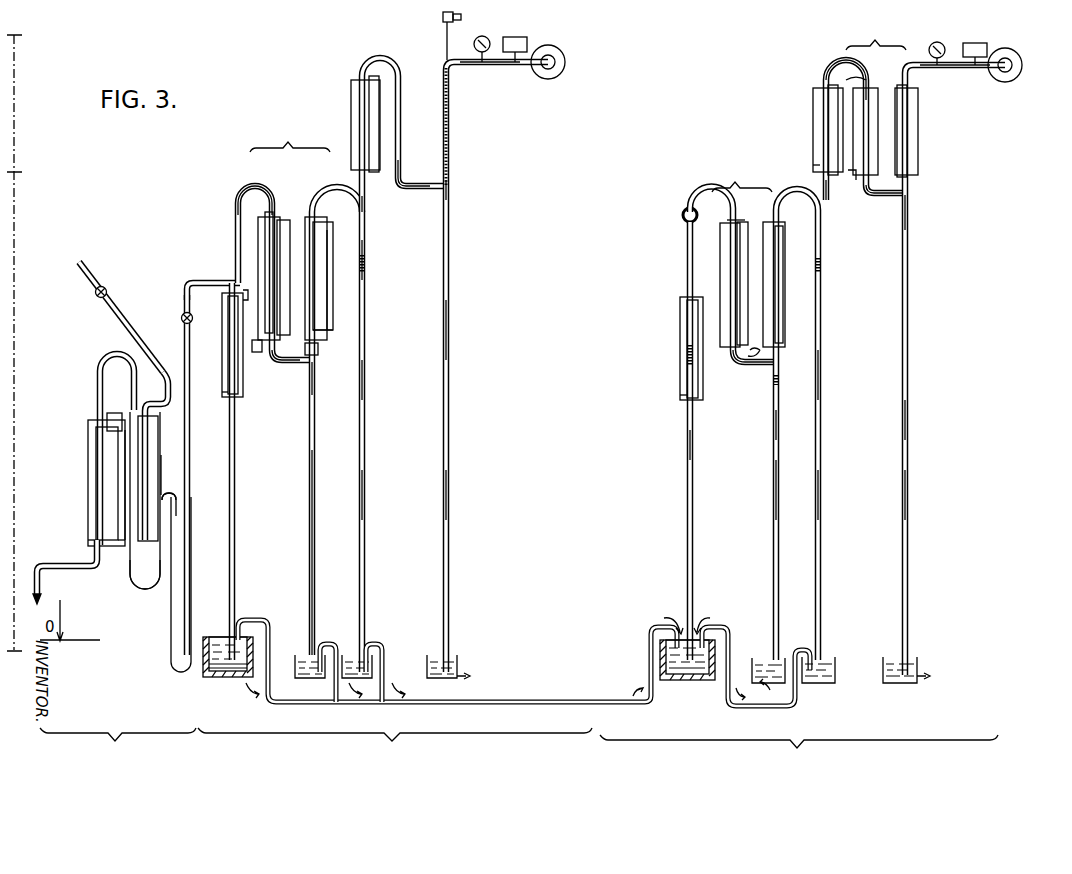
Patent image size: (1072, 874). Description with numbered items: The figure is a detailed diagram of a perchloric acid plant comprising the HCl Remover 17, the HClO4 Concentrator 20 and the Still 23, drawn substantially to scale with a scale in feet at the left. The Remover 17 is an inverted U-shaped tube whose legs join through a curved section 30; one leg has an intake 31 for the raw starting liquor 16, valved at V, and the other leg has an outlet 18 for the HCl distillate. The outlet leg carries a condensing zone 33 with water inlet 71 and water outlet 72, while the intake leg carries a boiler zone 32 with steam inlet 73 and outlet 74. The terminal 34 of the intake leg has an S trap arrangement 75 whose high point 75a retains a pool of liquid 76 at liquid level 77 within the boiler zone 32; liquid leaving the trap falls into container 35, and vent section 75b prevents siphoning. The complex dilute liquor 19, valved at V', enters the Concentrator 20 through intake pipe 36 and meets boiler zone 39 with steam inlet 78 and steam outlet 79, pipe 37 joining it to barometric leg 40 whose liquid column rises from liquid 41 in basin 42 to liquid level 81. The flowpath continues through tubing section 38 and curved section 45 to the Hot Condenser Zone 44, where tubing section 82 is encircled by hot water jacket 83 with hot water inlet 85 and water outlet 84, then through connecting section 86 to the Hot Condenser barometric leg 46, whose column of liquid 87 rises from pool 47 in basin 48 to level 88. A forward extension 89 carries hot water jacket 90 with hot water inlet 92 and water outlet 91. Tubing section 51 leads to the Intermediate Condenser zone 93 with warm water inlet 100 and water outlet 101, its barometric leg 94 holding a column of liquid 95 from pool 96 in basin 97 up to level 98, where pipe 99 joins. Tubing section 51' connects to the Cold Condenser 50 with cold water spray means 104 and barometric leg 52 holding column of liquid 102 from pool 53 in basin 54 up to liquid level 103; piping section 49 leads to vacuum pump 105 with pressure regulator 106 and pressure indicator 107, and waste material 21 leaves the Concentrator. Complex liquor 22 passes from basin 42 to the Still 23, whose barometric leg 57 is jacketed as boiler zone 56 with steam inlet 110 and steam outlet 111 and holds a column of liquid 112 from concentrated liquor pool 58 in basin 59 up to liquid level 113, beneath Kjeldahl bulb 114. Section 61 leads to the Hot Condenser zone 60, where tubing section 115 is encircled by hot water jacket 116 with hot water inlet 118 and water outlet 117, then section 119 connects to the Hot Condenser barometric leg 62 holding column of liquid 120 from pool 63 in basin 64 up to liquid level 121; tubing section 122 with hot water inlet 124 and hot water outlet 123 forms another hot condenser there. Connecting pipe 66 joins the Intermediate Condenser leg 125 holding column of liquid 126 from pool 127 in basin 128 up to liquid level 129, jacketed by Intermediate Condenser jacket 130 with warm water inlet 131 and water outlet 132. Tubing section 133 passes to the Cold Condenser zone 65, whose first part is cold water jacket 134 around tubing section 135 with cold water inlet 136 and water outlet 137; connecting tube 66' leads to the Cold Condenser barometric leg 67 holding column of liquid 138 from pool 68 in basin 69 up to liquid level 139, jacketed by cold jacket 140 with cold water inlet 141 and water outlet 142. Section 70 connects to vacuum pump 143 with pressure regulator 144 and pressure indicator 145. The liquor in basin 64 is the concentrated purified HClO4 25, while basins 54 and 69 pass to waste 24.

The raw starting liquor 16 is at (84, 276).
The HCl Remover 17 is at (118, 749).
The outlet 18 is at (66, 567).
The complex dilute liquor 19 is at (184, 292).
The HClO4 Concentrator 20 is at (395, 749).
The waste material 21 is at (476, 676).
The complex liquor 22 is at (508, 702).
The Still 23 is at (799, 754).
The waste 24 is at (935, 676).
The concentrated purified HClO4 25 is at (756, 666).
The curved section 30 is at (122, 356).
The intake 31 is at (108, 310).
The boiler zone 32 is at (146, 500).
The condensing zone 33 is at (87, 460).
The terminal 34 is at (140, 516).
The container 35 is at (170, 656).
The intake pipe 36 is at (178, 496).
The pipe 37 is at (232, 278).
The tubing section 38 is at (236, 246).
The boiler zone 39 is at (223, 348).
The barometric leg 40 is at (236, 490).
The liquid 41 is at (215, 634).
The basin 42 is at (240, 678).
The Hot Condenser Zone 44 is at (290, 136).
The curved section 45 is at (258, 192).
The Hot Condenser barometric leg 46 is at (315, 492).
The pool 47 is at (302, 650).
The basin 48 is at (297, 664).
The piping section 49 is at (470, 66).
The Cold Condenser 50 is at (443, 94).
The tubing section 51 is at (331, 416).
The tubing section 51' is at (416, 167).
The barometric leg 52 is at (450, 492).
The pool 53 is at (450, 654).
The basin 54 is at (458, 664).
The boiler zone 56 is at (679, 331).
The barometric leg 57 is at (686, 492).
The concentrated liquor pool 58 is at (678, 630).
The basin 59 is at (669, 680).
The Hot Condenser zone 60 is at (742, 173).
The section 61 is at (716, 186).
The Hot Condenser barometric leg 62 is at (774, 480).
The pool 63 is at (772, 656).
The basin 64 is at (752, 670).
The Cold Condenser zone 65 is at (876, 34).
The connecting pipe 66 is at (797, 408).
The connecting tube 66' is at (885, 202).
The Cold Condenser barometric leg 67 is at (910, 496).
The pool 68 is at (908, 656).
The basin 69 is at (918, 672).
The section 70 is at (930, 68).
The water inlet 71 is at (86, 533).
The water outlet 72 is at (118, 416).
The steam inlet 73 is at (142, 420).
The outlet 74 is at (103, 568).
The S trap arrangement 75 is at (155, 592).
The high point 75a is at (170, 492).
The vent section 75b is at (163, 450).
The pool of liquid 76 is at (124, 550).
The liquid level 77 is at (130, 476).
The steam inlet 78 is at (254, 296).
The steam outlet 79 is at (222, 396).
The liquid level 81 is at (229, 362).
The tubing section 82 is at (266, 215).
The hot water jacket 83 is at (262, 258).
The water outlet 84 is at (286, 224).
The hot water inlet 85 is at (257, 352).
The connecting section 86 is at (292, 364).
The column of liquid 87 is at (314, 472).
The level 88 is at (316, 378).
The forward extension 89 is at (322, 212).
The hot water jacket 90 is at (325, 294).
The water outlet 91 is at (330, 230).
The hot water inlet 92 is at (325, 334).
The Intermediate Condenser zone 93 is at (352, 100).
The barometric leg 94 is at (366, 492).
The column of liquid 95 is at (366, 384).
The pool 96 is at (348, 650).
The basin 97 is at (348, 662).
The level 98 is at (365, 256).
The pipe 99 is at (370, 180).
The warm water inlet 100 is at (300, 143).
The water outlet 101 is at (363, 70).
The column of liquid 102 is at (449, 334).
The liquid level 103 is at (450, 188).
The cold water spray means 104 is at (443, 40).
The vacuum pump 105 is at (566, 56).
The pressure regulator 106 is at (517, 36).
The pressure indicator 107 is at (485, 36).
The steam inlet 110 is at (712, 296).
The steam outlet 111 is at (680, 395).
The column of liquid 112 is at (687, 446).
The liquid level 113 is at (687, 352).
The Kjeldahl bulb 114 is at (682, 215).
The tubing section 115 is at (735, 216).
The hot water jacket 116 is at (722, 244).
The water outlet 117 is at (758, 224).
The hot water inlet 118 is at (726, 345).
The section 119 is at (770, 380).
The column of liquid 120 is at (779, 426).
The liquid level 121 is at (779, 366).
The tubing section 122 is at (786, 306).
The hot water outlet 123 is at (796, 224).
The hot water inlet 124 is at (758, 352).
The Intermediate Condenser leg 125 is at (822, 512).
The column of liquid 126 is at (822, 374).
The pool 127 is at (826, 656).
The basin 128 is at (836, 670).
The liquid level 129 is at (822, 264).
The Intermediate Condenser jacket 130 is at (812, 129).
The warm water inlet 131 is at (812, 166).
The water outlet 132 is at (832, 72).
The tubing section 133 is at (836, 58).
The cold water jacket 134 is at (850, 108).
The tubing section 135 is at (864, 64).
The cold water inlet 136 is at (855, 176).
The water outlet 137 is at (870, 92).
The column of liquid 138 is at (910, 424).
The liquid level 139 is at (910, 198).
The cold jacket 140 is at (918, 144).
The cold water inlet 141 is at (912, 189).
The water outlet 142 is at (916, 96).
The vacuum pump 143 is at (1022, 60).
The pressure regulator 144 is at (977, 42).
The pressure indicator 145 is at (940, 42).
The valve V is at (112, 284).
The valve V' is at (174, 330).